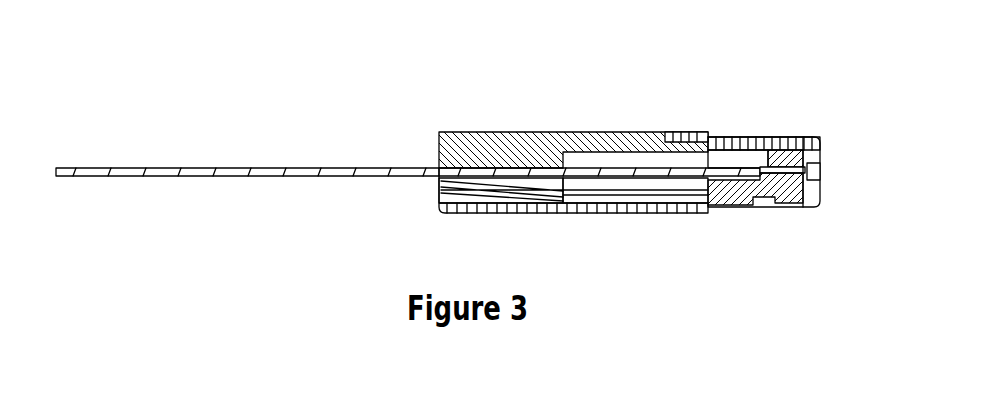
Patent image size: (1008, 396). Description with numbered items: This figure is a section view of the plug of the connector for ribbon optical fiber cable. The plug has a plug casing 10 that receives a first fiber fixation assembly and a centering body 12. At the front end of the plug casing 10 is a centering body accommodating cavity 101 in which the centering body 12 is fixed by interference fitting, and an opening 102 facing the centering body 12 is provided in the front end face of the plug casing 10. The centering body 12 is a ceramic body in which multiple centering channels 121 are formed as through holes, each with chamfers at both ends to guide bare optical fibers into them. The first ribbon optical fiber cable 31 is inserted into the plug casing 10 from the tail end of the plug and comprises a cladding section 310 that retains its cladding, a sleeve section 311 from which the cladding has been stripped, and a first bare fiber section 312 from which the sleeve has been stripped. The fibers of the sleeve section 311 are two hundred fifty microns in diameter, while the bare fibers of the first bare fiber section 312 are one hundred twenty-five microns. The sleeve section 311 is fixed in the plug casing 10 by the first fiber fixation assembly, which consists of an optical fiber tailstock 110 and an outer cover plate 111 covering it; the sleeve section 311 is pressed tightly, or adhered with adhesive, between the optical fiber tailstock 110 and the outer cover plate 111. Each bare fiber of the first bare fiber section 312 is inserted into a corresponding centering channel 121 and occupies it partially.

The plug casing 10 is at (640, 152).
The centering body 12 is at (767, 149).
The first ribbon optical fiber cable 31 is at (247, 166).
The centering body accommodating cavity 101 is at (745, 157).
The opening 102 is at (817, 172).
The optical fiber tailstock 110 is at (481, 190).
The outer cover plate 111 is at (496, 142).
The centering channels 121 is at (800, 152).
The cladding section 310 is at (265, 175).
The sleeve section 311 is at (602, 173).
The first bare fiber section 312 is at (773, 168).